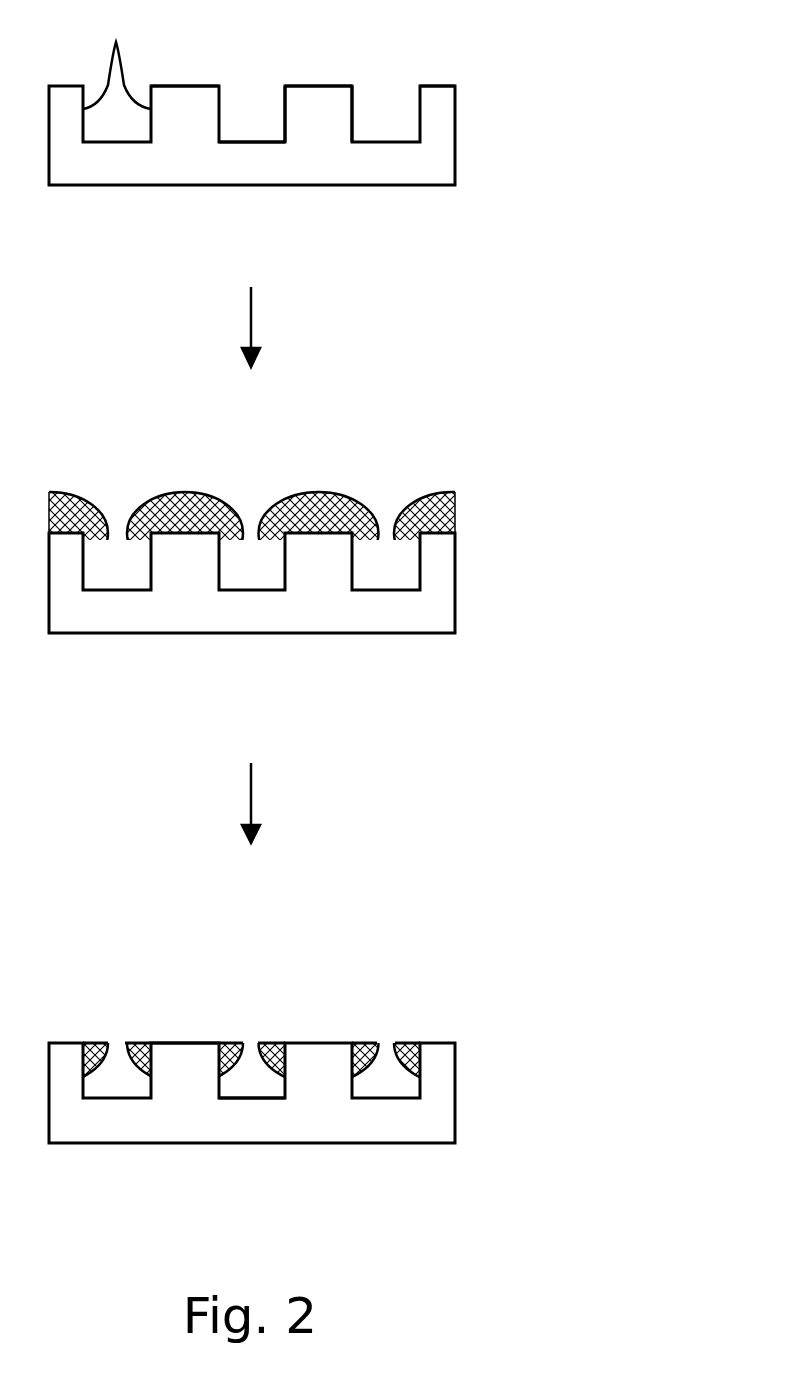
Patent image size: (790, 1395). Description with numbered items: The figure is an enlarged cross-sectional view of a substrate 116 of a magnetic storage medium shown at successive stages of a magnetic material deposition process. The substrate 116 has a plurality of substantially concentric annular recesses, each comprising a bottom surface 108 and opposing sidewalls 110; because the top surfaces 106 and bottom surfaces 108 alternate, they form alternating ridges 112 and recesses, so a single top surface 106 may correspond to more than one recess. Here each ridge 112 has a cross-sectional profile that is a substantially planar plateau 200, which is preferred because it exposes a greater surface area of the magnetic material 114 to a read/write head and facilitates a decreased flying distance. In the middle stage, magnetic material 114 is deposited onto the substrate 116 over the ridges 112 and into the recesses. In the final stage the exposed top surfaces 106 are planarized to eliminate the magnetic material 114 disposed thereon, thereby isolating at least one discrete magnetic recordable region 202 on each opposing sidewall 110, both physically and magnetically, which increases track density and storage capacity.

The top surface 106 is at (342, 86).
The bottom surface 108 is at (251, 142).
The opposing sidewalls 110 is at (117, 59).
The ridge 112 is at (317, 97).
The magnetic material 114 is at (316, 502).
The substrate 116 is at (272, 176).
The substantially planar plateau 200 is at (180, 86).
The magnetic recordable region 202 is at (410, 1043).